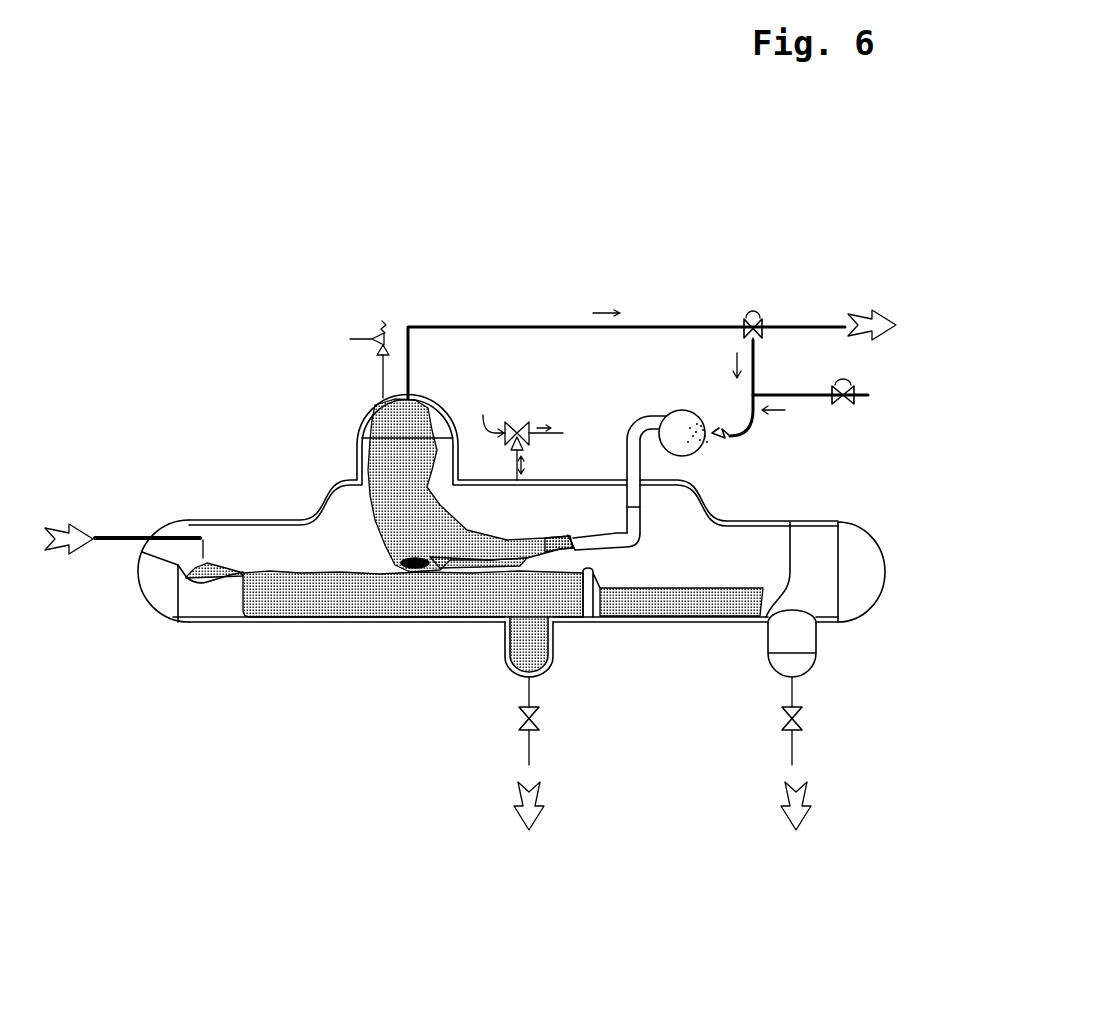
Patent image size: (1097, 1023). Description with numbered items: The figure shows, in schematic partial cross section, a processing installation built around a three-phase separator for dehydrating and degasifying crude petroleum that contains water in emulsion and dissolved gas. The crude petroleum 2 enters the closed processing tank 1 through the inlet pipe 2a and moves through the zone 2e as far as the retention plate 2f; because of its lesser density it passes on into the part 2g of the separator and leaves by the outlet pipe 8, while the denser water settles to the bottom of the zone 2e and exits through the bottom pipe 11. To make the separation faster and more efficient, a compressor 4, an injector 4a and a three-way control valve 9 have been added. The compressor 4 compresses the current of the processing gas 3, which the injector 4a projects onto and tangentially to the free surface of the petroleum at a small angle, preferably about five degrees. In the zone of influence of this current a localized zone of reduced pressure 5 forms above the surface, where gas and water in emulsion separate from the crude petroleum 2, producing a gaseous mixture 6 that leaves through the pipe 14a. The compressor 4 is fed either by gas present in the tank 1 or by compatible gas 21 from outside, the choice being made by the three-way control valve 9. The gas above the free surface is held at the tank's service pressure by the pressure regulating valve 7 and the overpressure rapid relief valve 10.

The closed processing tank 1 is at (257, 518).
The crude petroleum 2 is at (210, 566).
The inlet pipe 2a is at (125, 537).
The zone 2e is at (312, 593).
The retention plate 2f is at (598, 590).
The part of the separator 2g is at (670, 590).
The current of the processing gas 3 is at (560, 540).
The compressor 4 is at (697, 452).
The injector 4a is at (592, 547).
The localized zone of reduced pressure 5 is at (493, 557).
The gaseous mixture 6 is at (423, 530).
The pressure regulating valve 7 is at (523, 439).
The outlet pipe 8 is at (797, 697).
The three-way control valve 9 is at (757, 310).
The overpressure rapid relief valve 10 is at (364, 359).
The bottom pipe 11 is at (530, 703).
The pipe 14a is at (408, 372).
The compatible gas 21 is at (783, 397).